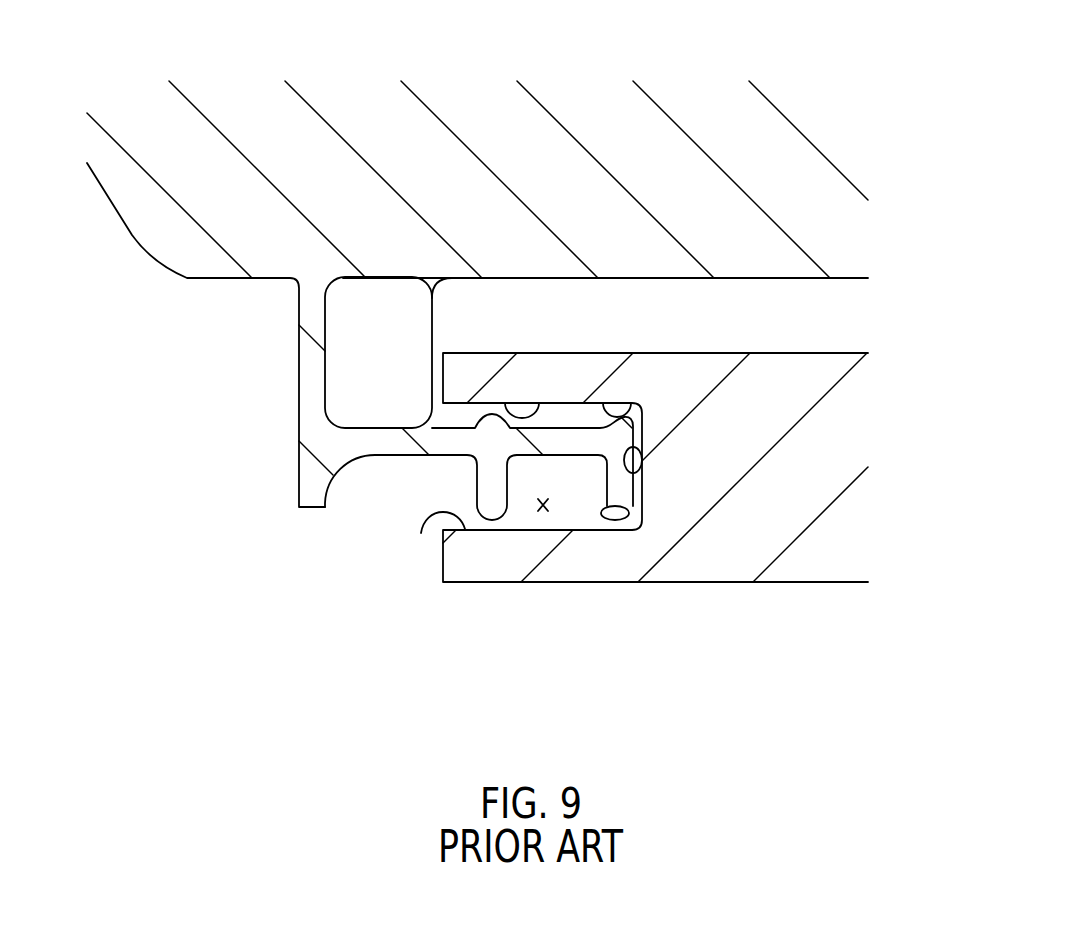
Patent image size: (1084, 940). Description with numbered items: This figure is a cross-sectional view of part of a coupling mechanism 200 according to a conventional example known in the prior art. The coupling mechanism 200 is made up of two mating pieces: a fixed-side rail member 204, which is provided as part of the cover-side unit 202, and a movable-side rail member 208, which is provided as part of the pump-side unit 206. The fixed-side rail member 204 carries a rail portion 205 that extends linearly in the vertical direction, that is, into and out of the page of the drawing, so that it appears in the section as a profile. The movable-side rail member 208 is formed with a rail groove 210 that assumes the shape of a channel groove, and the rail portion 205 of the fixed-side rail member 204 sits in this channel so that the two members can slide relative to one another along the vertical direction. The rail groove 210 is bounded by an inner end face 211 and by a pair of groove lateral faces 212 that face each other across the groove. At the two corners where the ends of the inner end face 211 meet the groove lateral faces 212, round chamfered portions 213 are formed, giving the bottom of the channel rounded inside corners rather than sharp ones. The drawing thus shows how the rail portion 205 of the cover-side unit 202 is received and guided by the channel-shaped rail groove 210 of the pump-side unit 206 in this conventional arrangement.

The coupling mechanism 200 is at (298, 560).
The cover-side unit 202 is at (131, 240).
The fixed-side rail member 204 is at (298, 370).
The rail portion 205 is at (568, 440).
The pump-side unit 206 is at (720, 593).
The movable-side rail member 208 is at (492, 586).
The rail groove 210 is at (544, 512).
The inner end face 211 is at (643, 452).
The groove lateral faces 212 is at (538, 403).
The round chamfered portions 213 is at (596, 402).